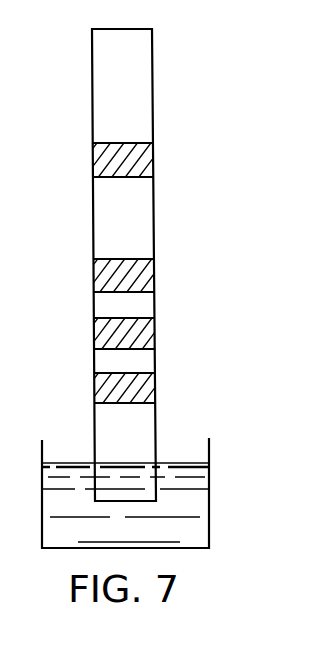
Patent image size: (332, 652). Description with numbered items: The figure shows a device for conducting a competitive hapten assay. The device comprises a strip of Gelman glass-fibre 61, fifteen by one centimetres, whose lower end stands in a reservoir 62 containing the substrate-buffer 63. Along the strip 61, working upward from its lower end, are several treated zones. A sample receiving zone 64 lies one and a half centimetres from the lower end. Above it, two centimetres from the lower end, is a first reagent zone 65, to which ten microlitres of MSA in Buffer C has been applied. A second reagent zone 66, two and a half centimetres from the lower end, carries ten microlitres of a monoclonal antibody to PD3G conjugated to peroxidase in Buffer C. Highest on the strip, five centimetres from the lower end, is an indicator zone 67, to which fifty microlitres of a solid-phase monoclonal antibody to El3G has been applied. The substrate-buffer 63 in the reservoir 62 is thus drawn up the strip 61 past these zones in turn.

The strip of Gelman glass-fibre 61 is at (135, 91).
The reservoir 62 is at (210, 448).
The substrate-buffer 63 is at (187, 506).
The sample receiving zone 64 is at (135, 394).
The first reagent zone 65 is at (127, 338).
The second reagent zone 66 is at (133, 279).
The indicator zone 67 is at (135, 161).